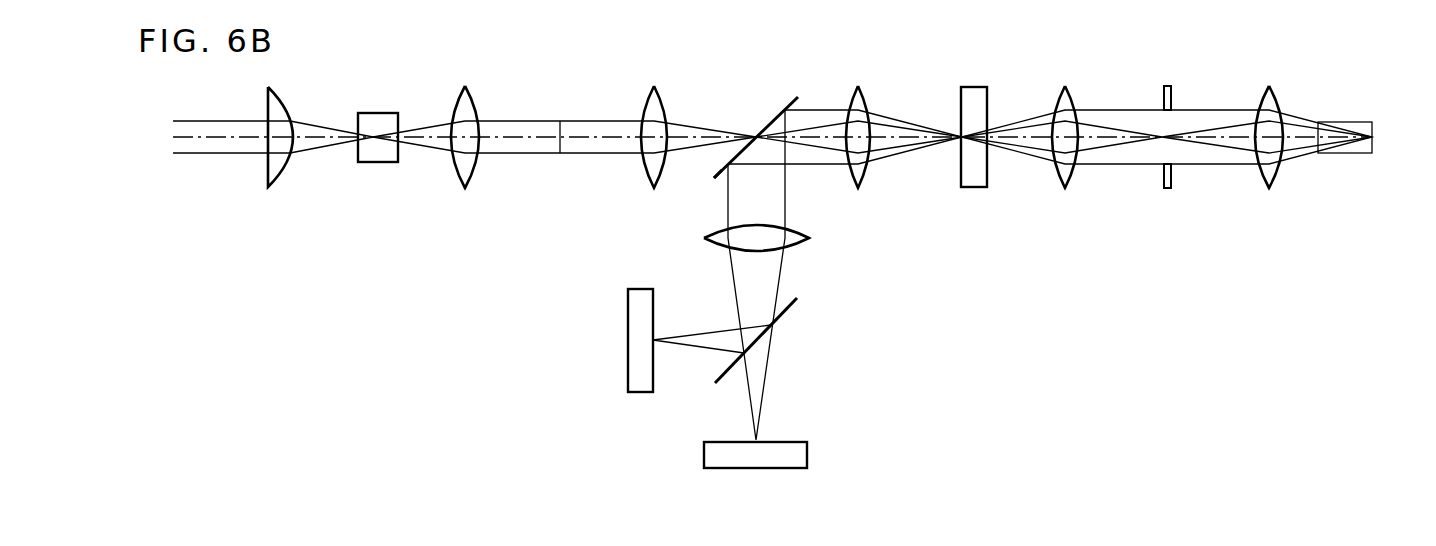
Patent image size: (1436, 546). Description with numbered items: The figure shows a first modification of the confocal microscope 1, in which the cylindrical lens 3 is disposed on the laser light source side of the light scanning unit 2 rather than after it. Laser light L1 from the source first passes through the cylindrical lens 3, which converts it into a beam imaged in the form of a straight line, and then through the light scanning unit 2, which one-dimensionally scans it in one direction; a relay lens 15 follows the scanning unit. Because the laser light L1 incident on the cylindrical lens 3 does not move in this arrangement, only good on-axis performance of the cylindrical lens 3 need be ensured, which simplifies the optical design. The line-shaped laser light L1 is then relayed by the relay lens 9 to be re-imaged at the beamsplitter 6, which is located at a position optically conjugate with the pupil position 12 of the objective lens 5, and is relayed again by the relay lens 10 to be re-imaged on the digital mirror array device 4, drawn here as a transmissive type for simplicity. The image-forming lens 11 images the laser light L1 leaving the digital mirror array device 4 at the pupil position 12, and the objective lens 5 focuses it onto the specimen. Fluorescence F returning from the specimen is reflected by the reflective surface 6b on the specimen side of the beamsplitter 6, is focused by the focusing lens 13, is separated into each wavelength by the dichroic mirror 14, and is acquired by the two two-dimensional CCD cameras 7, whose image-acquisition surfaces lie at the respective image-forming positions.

The confocal microscope 1 is at (1170, 308).
The light scanning unit 2 is at (381, 162).
The cylindrical lens 3 is at (275, 188).
The digital mirror array device 4 is at (978, 187).
The objective lens 5 is at (1280, 98).
The beamsplitter 6 is at (790, 103).
The reflective surface 6b is at (718, 176).
The two-dimensional CCD camera 7 is at (633, 392).
The relay lens 9 is at (646, 100).
The relay lens 10 is at (851, 95).
The image-forming lens 11 is at (1065, 188).
The pupil position 12 is at (1174, 95).
The focusing lens 13 is at (809, 238).
The dichroic mirror 14 is at (787, 312).
The relay lens 15 is at (465, 188).
The laser light L1 is at (527, 154).
The fluorescence F is at (1203, 165).